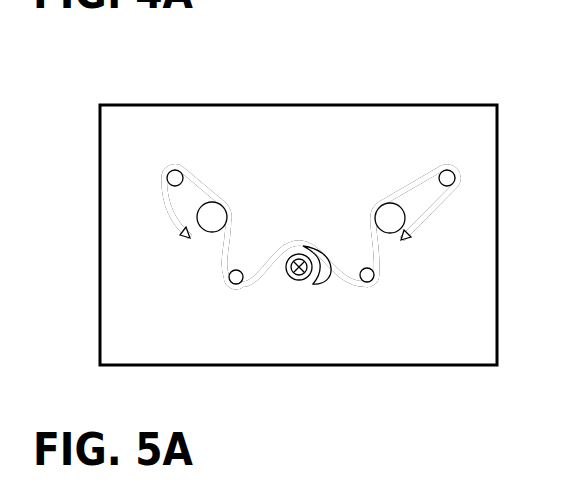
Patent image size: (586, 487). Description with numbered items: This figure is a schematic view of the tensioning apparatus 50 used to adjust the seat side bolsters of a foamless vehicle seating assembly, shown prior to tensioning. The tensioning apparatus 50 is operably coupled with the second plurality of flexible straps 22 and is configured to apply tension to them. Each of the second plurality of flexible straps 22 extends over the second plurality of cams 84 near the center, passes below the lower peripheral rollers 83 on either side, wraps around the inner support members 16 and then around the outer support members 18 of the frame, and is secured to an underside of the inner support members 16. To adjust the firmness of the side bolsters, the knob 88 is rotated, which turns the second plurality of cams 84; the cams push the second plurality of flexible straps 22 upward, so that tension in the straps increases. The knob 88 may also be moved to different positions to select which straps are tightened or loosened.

The tensioning apparatus 50 is at (477, 96).
The second plurality of flexible straps 22 is at (197, 180).
The outer support member 18 is at (170, 168).
The inner support member 16 is at (218, 213).
The lower peripheral rollers 83 is at (232, 288).
The knob 88 is at (293, 282).
The second plurality of cams 84 is at (322, 268).